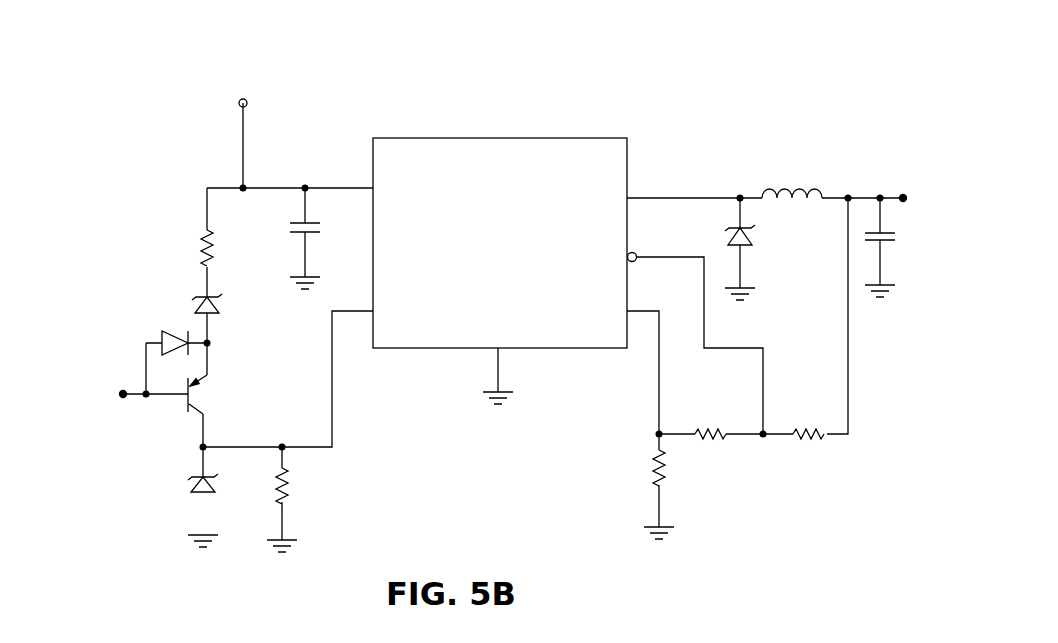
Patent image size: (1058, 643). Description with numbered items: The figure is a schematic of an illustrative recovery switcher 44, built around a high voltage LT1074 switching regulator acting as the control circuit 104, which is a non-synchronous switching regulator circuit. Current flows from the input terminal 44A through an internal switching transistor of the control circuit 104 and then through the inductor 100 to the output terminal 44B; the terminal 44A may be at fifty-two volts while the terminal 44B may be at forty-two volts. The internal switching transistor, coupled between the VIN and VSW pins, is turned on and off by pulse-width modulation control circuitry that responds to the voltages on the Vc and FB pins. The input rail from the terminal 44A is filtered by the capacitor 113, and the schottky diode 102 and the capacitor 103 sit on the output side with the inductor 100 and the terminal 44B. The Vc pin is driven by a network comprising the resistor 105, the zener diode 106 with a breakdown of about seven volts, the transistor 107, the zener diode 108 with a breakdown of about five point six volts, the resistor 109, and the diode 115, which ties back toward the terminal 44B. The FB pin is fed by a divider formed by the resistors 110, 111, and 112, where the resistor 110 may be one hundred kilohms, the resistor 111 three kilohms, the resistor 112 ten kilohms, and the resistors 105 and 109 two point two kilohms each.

The recovery switcher 44 is at (656, 69).
The terminal 44A is at (239, 88).
The terminal 44B is at (509, 284).
The inductor 100 is at (773, 186).
The schottky diode 102 is at (750, 237).
The capacitor 103 is at (887, 243).
The LT1074 control circuit 104 is at (468, 138).
The resistor 105 is at (215, 250).
The zener diode 106 is at (220, 310).
The transistor 107 is at (212, 412).
The zener diode 108 is at (190, 487).
The resistor 109 is at (290, 484).
The resistor 110 is at (800, 444).
The resistor 111 is at (703, 444).
The resistor 112 is at (650, 467).
The capacitor 113 is at (312, 236).
The diode 115 is at (165, 333).